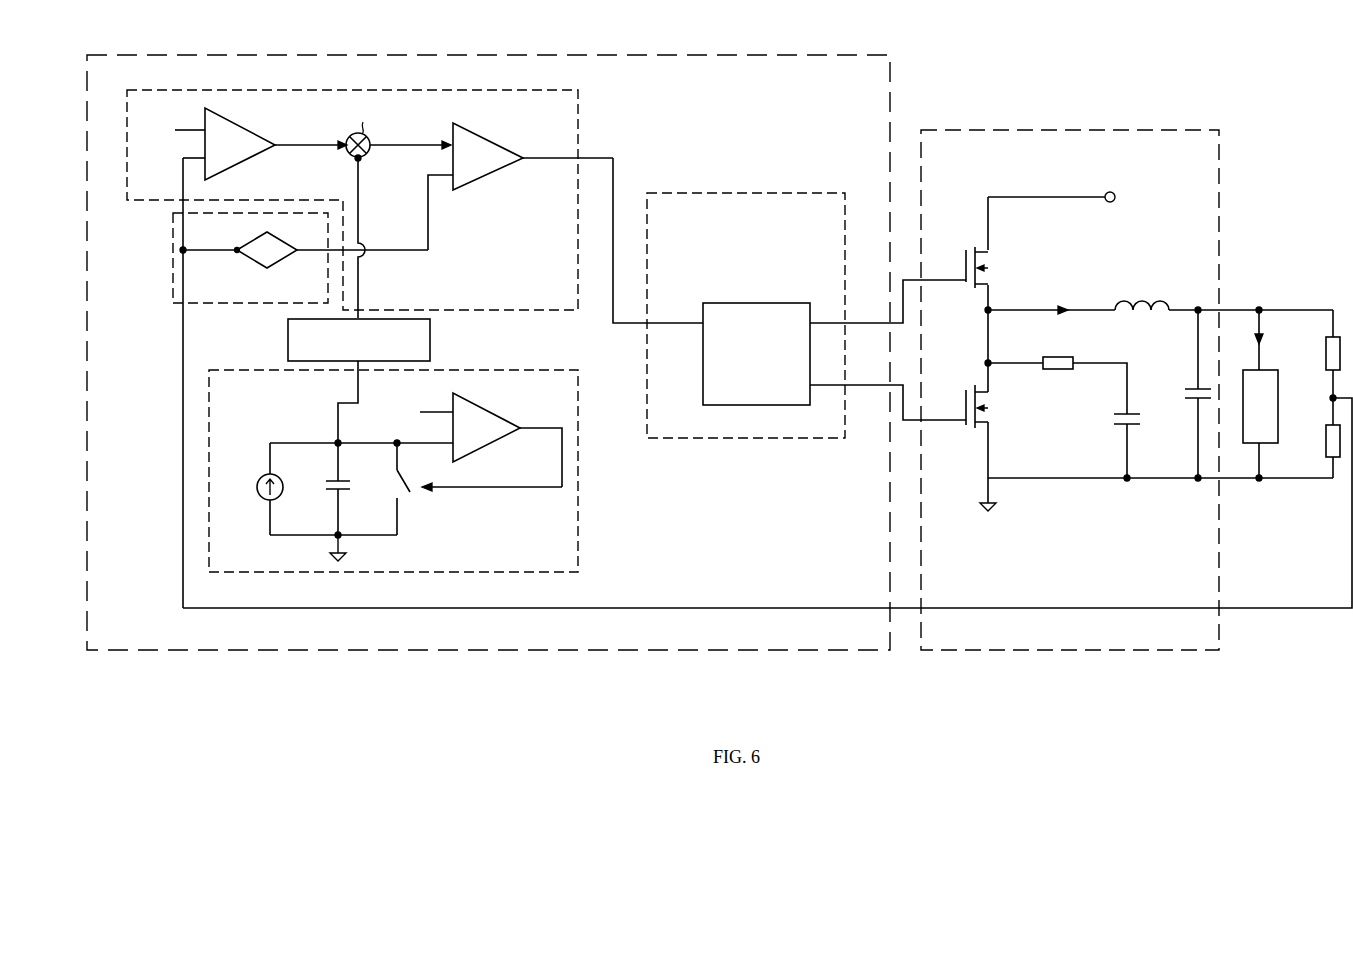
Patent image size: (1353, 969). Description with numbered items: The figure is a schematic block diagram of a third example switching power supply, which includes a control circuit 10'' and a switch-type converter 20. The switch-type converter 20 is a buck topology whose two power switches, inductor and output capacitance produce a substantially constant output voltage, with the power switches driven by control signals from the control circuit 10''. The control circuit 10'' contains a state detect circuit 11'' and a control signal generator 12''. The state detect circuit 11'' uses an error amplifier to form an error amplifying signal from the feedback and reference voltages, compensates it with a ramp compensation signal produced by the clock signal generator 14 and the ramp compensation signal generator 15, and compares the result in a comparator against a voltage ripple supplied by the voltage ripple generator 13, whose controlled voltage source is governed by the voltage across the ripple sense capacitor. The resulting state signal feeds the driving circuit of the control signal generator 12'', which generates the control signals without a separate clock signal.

The control circuit 10'' is at (526, 325).
The state detect circuit 11'' is at (370, 349).
The control signal generator 12'' is at (789, 298).
The voltage ripple generator 13 is at (212, 305).
The clock signal generator 14 is at (393, 466).
The ramp compensation signal generator 15 is at (359, 340).
The switch-type converter 20 is at (1222, 212).